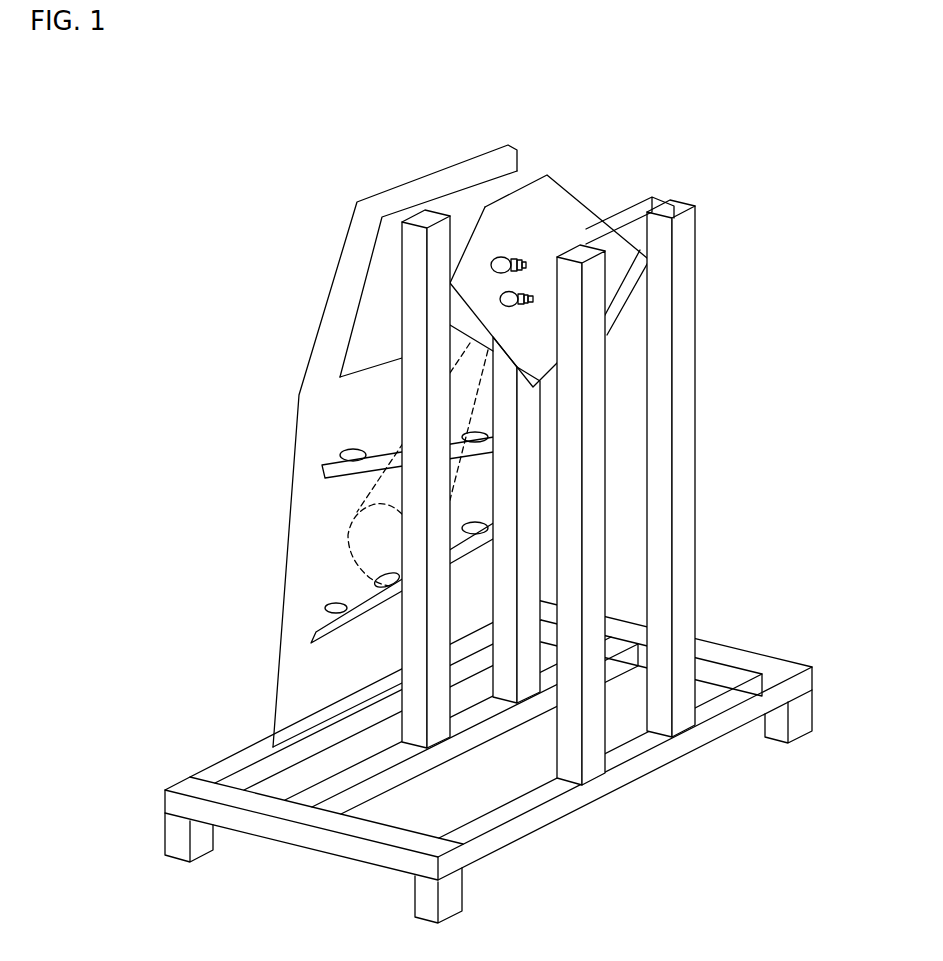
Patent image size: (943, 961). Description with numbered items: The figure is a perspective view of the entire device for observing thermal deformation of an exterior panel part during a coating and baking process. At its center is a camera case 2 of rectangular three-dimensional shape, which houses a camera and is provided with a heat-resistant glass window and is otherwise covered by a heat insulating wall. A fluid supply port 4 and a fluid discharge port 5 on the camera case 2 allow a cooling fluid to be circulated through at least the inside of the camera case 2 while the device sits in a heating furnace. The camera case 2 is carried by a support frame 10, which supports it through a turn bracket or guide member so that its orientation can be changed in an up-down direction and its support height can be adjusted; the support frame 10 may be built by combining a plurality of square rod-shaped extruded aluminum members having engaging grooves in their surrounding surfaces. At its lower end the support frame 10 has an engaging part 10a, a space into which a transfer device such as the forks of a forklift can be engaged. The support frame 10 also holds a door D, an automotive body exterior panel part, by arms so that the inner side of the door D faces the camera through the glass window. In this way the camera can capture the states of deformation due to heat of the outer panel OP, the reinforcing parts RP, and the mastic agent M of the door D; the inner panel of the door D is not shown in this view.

The camera case 2 is at (559, 237).
The fluid supply port 4 is at (531, 302).
The fluid discharge port 5 is at (527, 264).
The support frame 10 is at (607, 436).
The engaging part 10a is at (667, 782).
The door D is at (280, 493).
The mastic agent M is at (349, 457).
The reinforcing parts RP is at (344, 479).
The outer panel OP is at (303, 578).